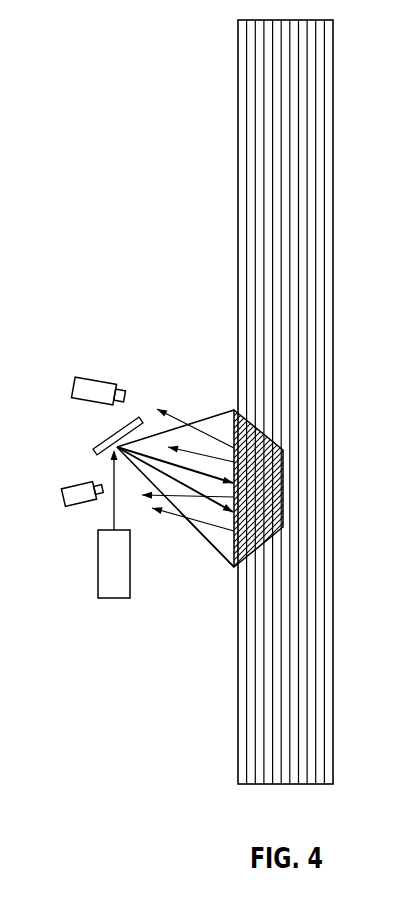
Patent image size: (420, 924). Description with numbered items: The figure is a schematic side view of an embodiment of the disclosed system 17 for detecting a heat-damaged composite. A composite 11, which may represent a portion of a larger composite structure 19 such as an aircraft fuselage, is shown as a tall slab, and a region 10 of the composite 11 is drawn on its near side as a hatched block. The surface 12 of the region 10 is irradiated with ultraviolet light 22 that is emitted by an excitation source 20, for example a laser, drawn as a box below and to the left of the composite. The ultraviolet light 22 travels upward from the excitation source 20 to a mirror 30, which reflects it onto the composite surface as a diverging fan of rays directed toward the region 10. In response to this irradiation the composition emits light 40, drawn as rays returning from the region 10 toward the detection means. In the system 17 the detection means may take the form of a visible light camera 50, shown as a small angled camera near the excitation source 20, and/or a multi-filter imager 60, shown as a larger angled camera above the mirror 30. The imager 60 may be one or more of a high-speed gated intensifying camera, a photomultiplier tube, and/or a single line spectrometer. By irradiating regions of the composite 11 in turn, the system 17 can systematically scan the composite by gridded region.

The region 10 is at (283, 498).
The composite 11 is at (238, 122).
The surface 12 is at (236, 421).
The system 17 is at (82, 272).
The larger composite structure 19 is at (308, 218).
The excitation source 20 is at (113, 598).
The ultraviolet light 22 is at (220, 565).
The mirror 30 is at (98, 447).
The light 40 is at (170, 415).
The visible light camera 50 is at (65, 485).
The multi-filter imager 60 is at (80, 375).